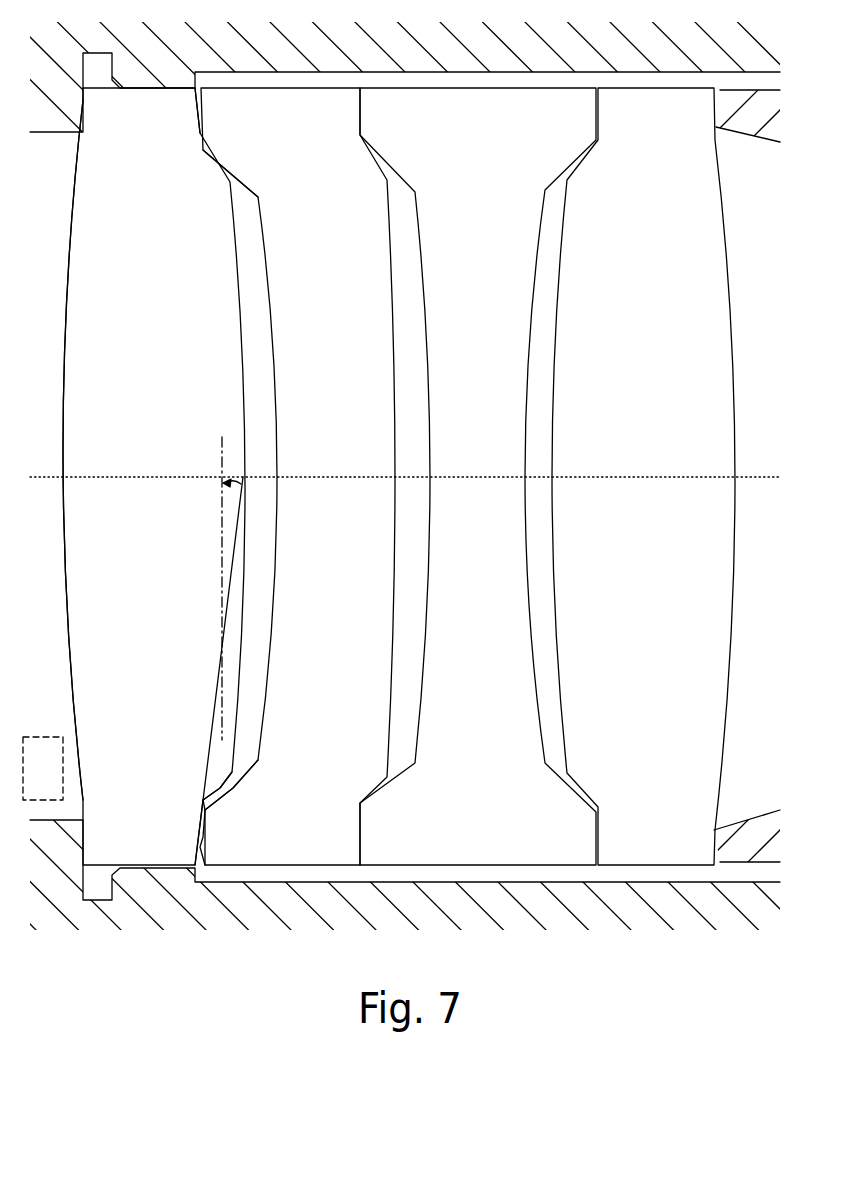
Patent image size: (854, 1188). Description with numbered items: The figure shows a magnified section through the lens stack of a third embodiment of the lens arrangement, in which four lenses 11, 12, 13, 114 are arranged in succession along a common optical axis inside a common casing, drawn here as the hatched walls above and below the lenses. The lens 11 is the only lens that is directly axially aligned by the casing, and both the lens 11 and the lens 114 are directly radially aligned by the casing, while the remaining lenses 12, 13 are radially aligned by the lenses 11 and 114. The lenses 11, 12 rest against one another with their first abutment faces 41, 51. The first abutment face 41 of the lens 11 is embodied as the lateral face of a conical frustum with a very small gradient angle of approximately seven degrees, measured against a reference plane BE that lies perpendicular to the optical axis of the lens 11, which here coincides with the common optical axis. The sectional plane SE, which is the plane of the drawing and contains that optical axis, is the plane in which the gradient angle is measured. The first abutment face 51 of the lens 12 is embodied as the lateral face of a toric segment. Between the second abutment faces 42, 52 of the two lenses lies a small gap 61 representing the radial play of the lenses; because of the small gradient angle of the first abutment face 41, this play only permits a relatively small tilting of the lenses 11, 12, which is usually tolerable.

The lens 11 is at (166, 261).
The lens 12 is at (326, 261).
The lens 13 is at (484, 268).
The lens 114 is at (667, 268).
The first abutment face 41 is at (188, 98).
The first abutment face 51 is at (210, 117).
The second abutment face 42 is at (214, 784).
The second abutment face 52 is at (243, 788).
The gap 61 is at (206, 800).
The reference plane BE is at (220, 450).
The sectional plane SE is at (43, 768).